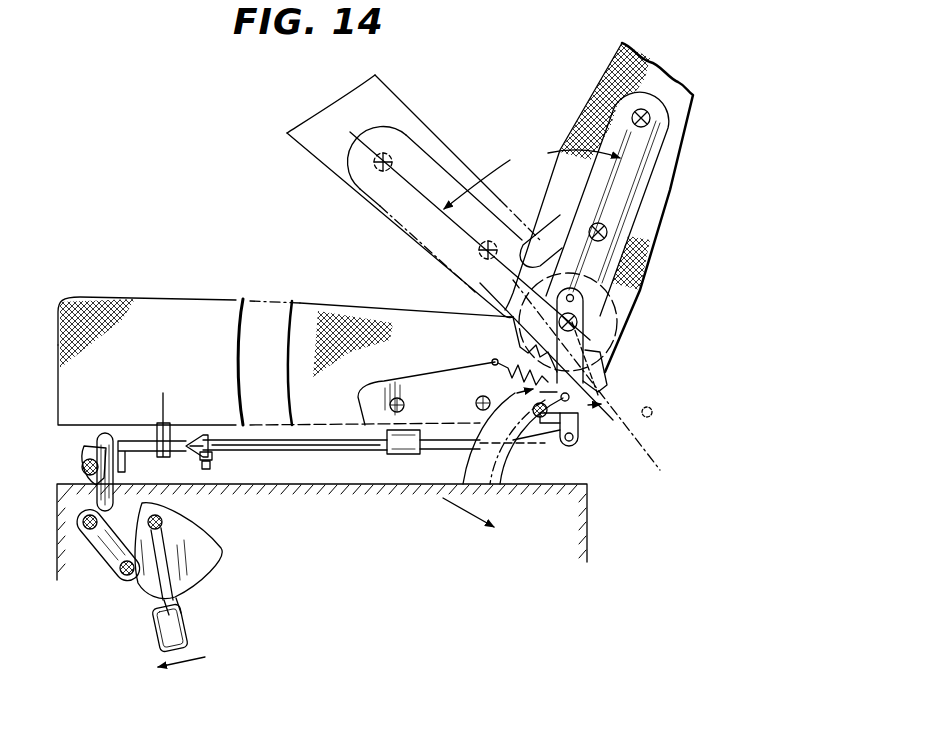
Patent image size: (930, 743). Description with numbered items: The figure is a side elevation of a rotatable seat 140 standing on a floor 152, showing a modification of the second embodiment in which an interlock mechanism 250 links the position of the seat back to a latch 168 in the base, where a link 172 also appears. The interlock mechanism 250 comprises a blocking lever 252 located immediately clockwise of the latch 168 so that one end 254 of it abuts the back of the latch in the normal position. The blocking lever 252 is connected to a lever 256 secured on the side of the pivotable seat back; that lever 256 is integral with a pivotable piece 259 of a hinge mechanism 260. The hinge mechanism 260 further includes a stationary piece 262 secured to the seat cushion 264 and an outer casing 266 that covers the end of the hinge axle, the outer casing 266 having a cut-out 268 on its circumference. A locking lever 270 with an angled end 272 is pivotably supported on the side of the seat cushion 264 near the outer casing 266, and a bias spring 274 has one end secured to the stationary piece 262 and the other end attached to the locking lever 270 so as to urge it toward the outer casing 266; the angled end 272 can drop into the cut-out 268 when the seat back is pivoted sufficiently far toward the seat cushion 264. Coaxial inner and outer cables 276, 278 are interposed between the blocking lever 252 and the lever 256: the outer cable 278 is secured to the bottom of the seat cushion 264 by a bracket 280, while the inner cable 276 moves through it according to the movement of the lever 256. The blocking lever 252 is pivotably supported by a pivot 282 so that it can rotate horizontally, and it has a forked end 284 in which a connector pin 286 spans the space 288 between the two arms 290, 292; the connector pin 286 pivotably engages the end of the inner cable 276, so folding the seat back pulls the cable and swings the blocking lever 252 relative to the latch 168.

The seat assembly 140 is at (251, 186).
The floor 152 is at (588, 512).
The latch 168 is at (82, 467).
The vertical link 172 is at (101, 436).
The interlock mechanism 250 is at (630, 325).
The blocking lever 252 is at (144, 446).
The end of blocking lever 254 is at (122, 441).
The lever 256 is at (652, 416).
The pivotable piece 259 is at (616, 242).
The hinge mechanism 260 is at (637, 293).
The stationary piece 262 is at (452, 413).
The seat cushion 264 is at (322, 340).
The outer casing 266 is at (606, 328).
The cut-out 268 is at (517, 350).
The locking lever 270 is at (522, 448).
The angled end 272 is at (618, 392).
The bias spring 274 is at (468, 378).
The inner cable 276 is at (450, 495).
The outer cable 278 is at (325, 452).
The bracket 280 is at (397, 454).
The pivot 282 is at (168, 420).
The forked end 284 is at (220, 431).
The connector pin 286 is at (206, 469).
The space 288 is at (236, 398).
The arm 290 is at (199, 436).
The arm 292 is at (212, 456).